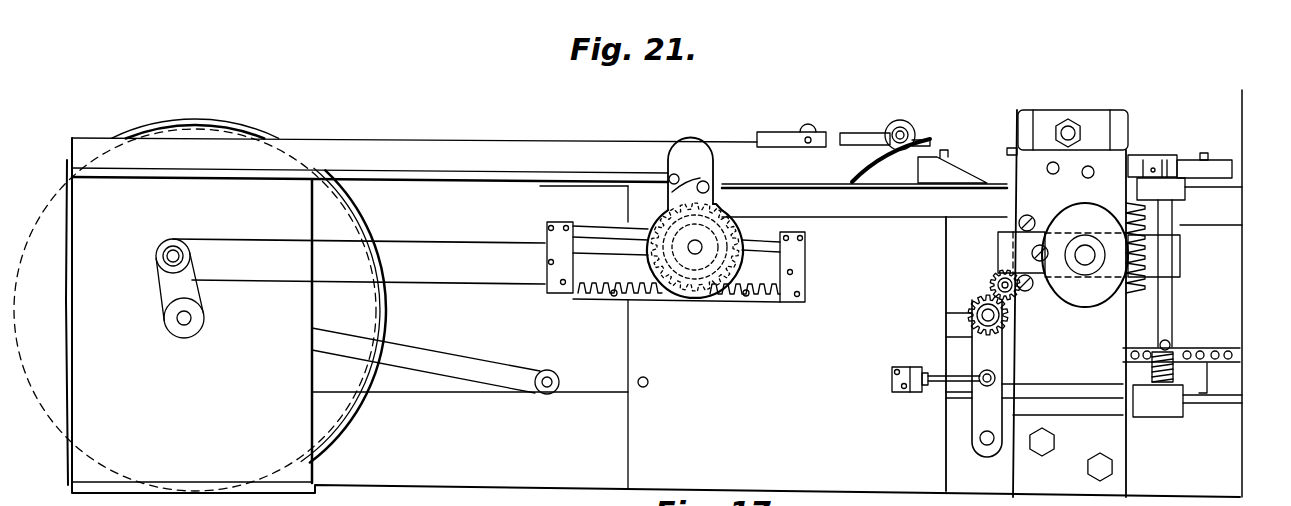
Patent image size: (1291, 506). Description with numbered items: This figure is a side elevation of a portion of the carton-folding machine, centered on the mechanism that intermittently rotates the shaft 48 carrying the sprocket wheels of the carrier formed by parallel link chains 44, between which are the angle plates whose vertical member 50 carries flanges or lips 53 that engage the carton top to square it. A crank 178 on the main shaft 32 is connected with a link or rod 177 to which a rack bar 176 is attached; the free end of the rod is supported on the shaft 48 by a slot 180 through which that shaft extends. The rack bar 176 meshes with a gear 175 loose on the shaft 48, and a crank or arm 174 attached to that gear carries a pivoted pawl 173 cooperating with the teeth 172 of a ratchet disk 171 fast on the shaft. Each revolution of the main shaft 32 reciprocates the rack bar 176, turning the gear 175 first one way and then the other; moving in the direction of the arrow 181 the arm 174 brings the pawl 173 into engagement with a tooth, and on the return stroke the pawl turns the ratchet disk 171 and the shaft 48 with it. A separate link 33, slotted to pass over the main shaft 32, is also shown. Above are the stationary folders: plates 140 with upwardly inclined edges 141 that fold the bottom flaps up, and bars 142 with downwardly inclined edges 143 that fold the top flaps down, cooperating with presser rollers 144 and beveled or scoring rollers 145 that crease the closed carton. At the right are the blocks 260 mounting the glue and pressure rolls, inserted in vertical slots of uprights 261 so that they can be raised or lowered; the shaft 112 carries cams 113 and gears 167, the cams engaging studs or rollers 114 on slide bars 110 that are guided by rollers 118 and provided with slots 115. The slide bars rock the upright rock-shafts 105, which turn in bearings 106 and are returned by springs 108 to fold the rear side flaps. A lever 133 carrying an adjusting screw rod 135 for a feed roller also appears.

The crank 178 is at (158, 290).
The main shaft 32 is at (180, 322).
The link or rod 177 is at (456, 250).
The link 33 is at (462, 356).
The slot 180 is at (593, 240).
The crank or arm 174 is at (676, 158).
The pawl 173 is at (665, 194).
The teeth 172 is at (718, 212).
The shaft 48 is at (700, 246).
The rack bar 176 is at (676, 278).
The ratchet disk 171 is at (680, 277).
The gear 175 is at (757, 267).
The arrow 181 is at (710, 296).
The beveled or scoring rollers 145 is at (812, 129).
The bars 142 is at (845, 152).
The presser rollers 144 is at (903, 127).
The downwardly inclined edges 143 is at (880, 173).
The upwardly inclined edges 141 is at (960, 173).
The vertical member 50 is at (939, 149).
The flanges or lips 53 is at (950, 158).
The plates 140 is at (935, 185).
The studs or rollers 114 is at (1040, 255).
The uprights 261 is at (1017, 112).
The blocks 260 is at (1083, 110).
The rollers 118 is at (1028, 220).
The bearings 106 is at (1176, 191).
The slots 115 is at (1144, 248).
The slide bars 110 is at (1172, 264).
The shaft 112 is at (1080, 268).
The cams 113 is at (1088, 312).
The gears 167 is at (1140, 313).
The rock-shafts 105 is at (1172, 312).
The link chains 44 is at (1181, 342).
The springs 108 is at (1179, 370).
The adjusting screw rod 135 is at (892, 383).
The levers 133 is at (980, 414).